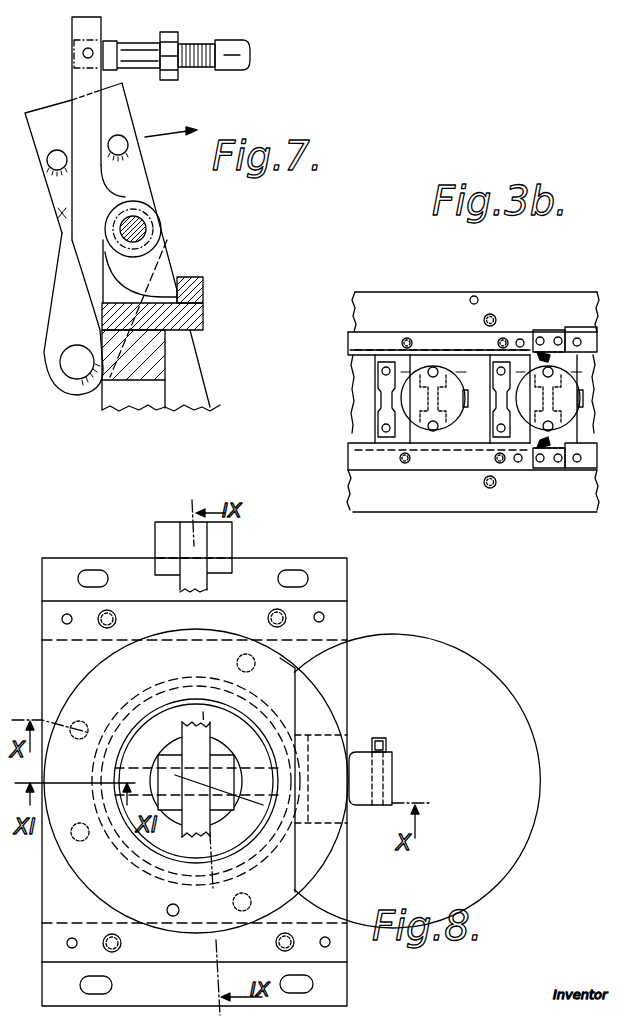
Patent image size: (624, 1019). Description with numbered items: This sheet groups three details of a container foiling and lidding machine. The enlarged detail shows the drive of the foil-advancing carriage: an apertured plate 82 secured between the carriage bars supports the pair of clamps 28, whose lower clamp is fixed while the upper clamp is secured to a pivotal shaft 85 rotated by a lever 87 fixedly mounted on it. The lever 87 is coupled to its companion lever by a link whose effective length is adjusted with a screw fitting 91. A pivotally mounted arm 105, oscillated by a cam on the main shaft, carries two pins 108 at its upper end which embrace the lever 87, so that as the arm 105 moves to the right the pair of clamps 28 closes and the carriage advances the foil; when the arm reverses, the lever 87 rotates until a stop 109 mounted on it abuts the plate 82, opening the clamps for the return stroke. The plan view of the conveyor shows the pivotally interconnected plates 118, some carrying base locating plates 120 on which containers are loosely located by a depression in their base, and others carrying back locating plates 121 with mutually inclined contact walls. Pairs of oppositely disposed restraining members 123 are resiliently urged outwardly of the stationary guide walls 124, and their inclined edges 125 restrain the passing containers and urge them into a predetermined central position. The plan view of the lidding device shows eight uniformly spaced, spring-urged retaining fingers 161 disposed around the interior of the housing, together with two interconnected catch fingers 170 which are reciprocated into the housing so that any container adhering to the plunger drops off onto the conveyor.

In FIG. 7, the pair of clamps 28 is at (204, 317).
In FIG. 7, the plate 82 is at (160, 357).
In FIG. 7, the pivotal shaft 85 is at (142, 226).
In FIG. 7, the lever 87 is at (62, 288).
In FIG. 7, the screw fitting 91 is at (164, 76).
In FIG. 7, the pivotally mounted arm 105 is at (63, 213).
In FIG. 7, the pin 108 is at (62, 150).
In FIG. 7, the stop 109 is at (78, 373).
In FIG. 3B, the pivotally interconnected plate 118 is at (444, 441).
In FIG. 3B, the base locating plate 120 is at (431, 372).
In FIG. 3B, the back locating plate 121 is at (390, 370).
In FIG. 3B, the restraining member 123 is at (560, 343).
In FIG. 3B, the stationary guide wall 124 is at (382, 303).
In FIG. 3B, the inclined edge 125 is at (540, 341).
In FIG. 8, the retaining finger 161 is at (96, 864).
In FIG. 8, the catch finger 170 is at (340, 758).